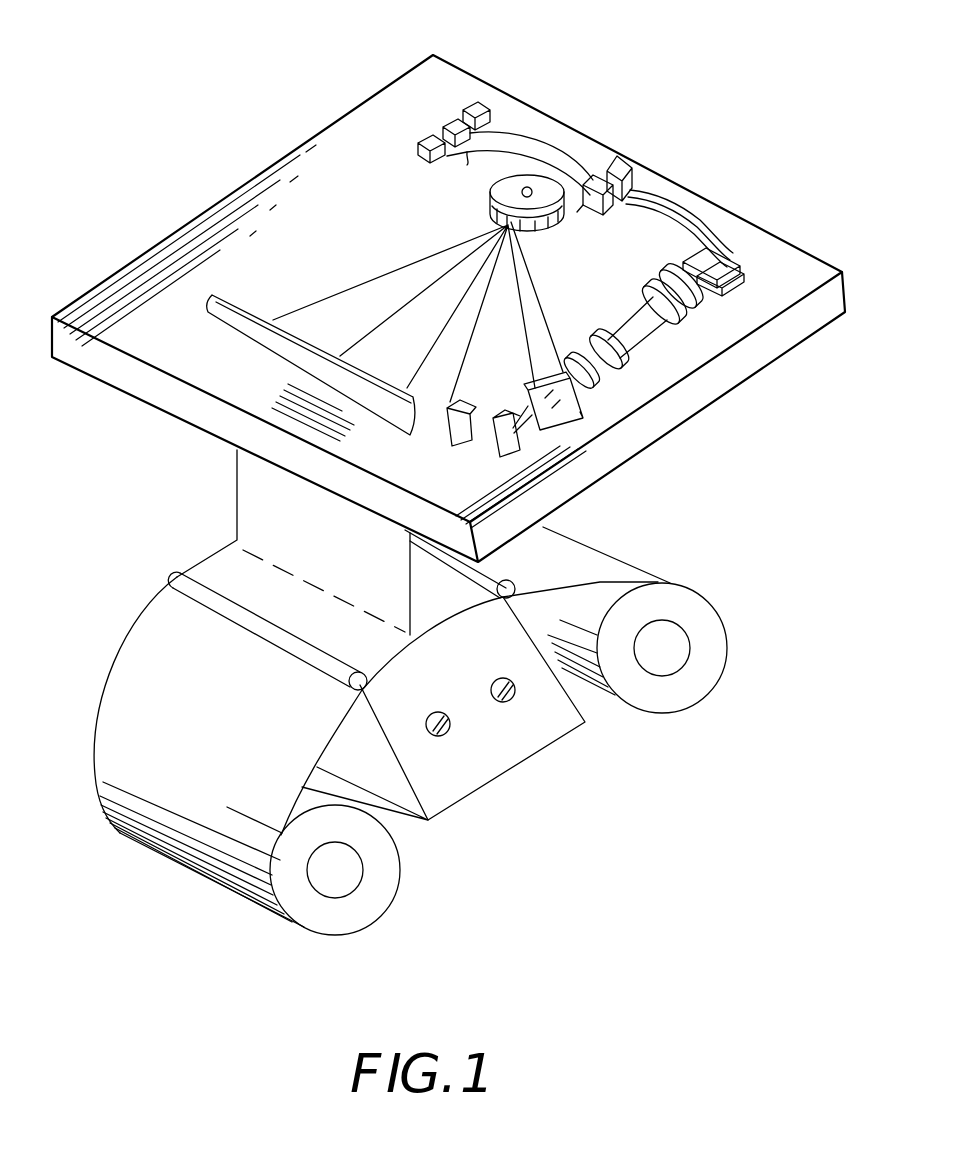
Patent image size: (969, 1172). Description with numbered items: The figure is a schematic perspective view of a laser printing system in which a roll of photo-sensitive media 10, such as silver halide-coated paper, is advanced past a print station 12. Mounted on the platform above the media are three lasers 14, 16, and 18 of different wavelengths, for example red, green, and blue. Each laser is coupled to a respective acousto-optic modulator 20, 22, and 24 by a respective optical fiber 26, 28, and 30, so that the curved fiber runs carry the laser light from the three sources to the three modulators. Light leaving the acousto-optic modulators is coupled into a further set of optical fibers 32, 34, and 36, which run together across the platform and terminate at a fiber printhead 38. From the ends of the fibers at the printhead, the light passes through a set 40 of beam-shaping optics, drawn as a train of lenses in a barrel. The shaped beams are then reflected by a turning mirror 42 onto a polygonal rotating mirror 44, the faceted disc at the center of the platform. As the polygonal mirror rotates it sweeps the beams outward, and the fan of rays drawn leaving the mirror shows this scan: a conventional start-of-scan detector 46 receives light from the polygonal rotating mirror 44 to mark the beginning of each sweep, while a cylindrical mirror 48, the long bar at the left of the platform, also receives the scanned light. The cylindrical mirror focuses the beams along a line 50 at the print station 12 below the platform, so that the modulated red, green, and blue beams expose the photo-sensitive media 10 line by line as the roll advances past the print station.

The roll of photo-sensitive media 10 is at (135, 663).
The print station 12 is at (547, 812).
The laser 14 is at (463, 107).
The laser 16 is at (444, 124).
The laser 18 is at (418, 137).
The acousto-optic modulator 20 is at (618, 168).
The acousto-optic modulator 22 is at (600, 176).
The acousto-optic modulator 24 is at (577, 214).
The optical fiber 26 is at (557, 140).
The optical fiber 28 is at (517, 133).
The optical fiber 30 is at (467, 165).
The optical fiber 32 is at (670, 203).
The optical fiber 34 is at (653, 193).
The optical fiber 36 is at (630, 216).
The fiber printhead 38 is at (740, 261).
The set of beam-shaping optics 40 is at (650, 352).
The turning mirror 42 is at (573, 437).
The polygonal rotating mirror 44 is at (497, 217).
The start-of-scan detector 46 is at (453, 436).
The cylindrical mirror 48 is at (225, 327).
The line 50 is at (243, 547).